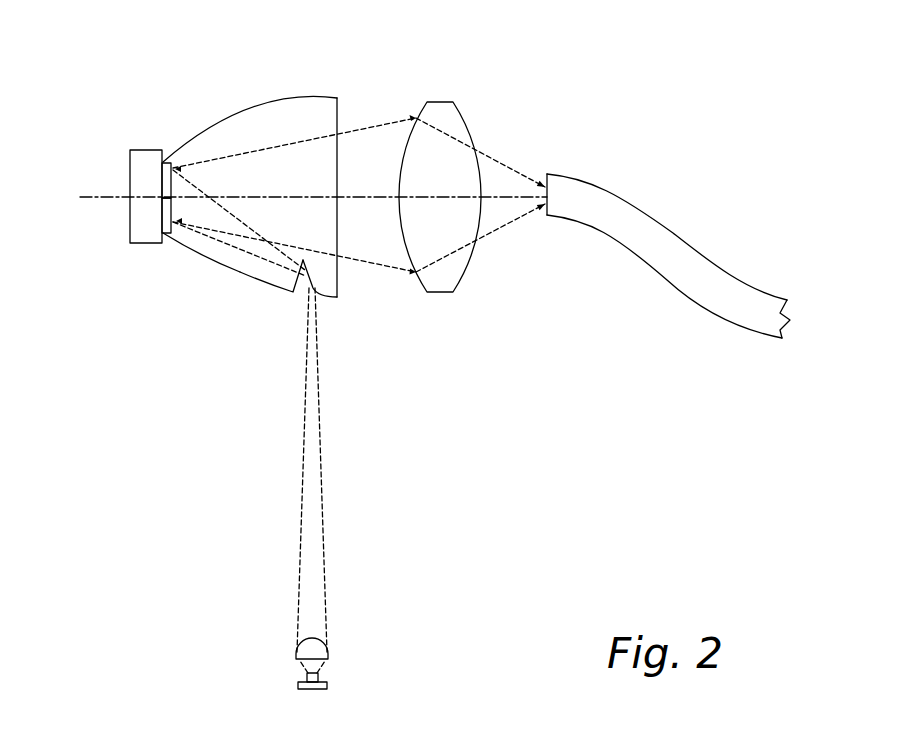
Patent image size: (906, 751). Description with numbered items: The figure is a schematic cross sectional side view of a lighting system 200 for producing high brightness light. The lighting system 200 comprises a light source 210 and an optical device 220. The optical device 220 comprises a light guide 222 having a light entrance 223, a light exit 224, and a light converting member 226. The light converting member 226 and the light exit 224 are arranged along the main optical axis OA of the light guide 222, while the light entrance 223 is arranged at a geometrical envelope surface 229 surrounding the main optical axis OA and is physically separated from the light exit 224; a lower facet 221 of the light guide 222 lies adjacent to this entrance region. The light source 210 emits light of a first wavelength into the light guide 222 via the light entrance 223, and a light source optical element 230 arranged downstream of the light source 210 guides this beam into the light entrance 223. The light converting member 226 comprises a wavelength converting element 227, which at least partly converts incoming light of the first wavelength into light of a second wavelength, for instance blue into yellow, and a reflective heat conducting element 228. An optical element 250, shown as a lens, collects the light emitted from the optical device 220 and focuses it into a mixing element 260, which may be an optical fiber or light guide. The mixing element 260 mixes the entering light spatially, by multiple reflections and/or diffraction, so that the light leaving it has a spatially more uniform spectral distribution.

The lighting system 200 is at (88, 115).
The light source 210 is at (327, 684).
The optical device 220 is at (284, 196).
The lower facet of light guide 221 is at (275, 289).
The light guide 222 is at (221, 261).
The light entrance 223 is at (313, 293).
The light exit 224 is at (340, 107).
The light converting member 226 is at (164, 222).
The wavelength converting element 227 is at (164, 168).
The reflective heat conducting element 228 is at (142, 180).
The geometrical envelope surface 229 is at (300, 99).
The light source optical element 230 is at (328, 655).
The optical element 250 is at (433, 255).
The mixing element 260 is at (627, 215).
The main optical axis OA is at (98, 198).